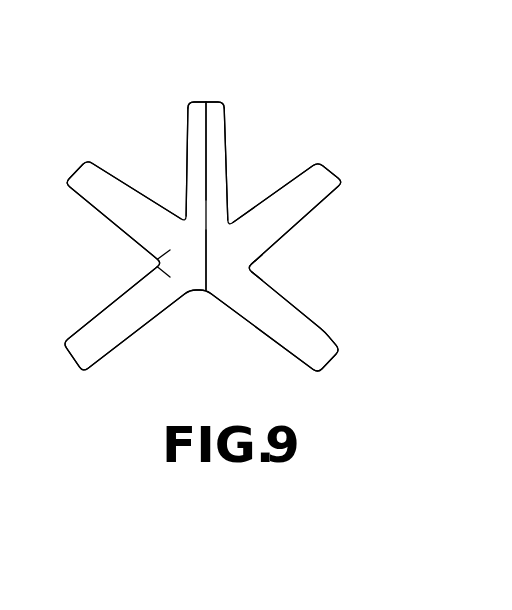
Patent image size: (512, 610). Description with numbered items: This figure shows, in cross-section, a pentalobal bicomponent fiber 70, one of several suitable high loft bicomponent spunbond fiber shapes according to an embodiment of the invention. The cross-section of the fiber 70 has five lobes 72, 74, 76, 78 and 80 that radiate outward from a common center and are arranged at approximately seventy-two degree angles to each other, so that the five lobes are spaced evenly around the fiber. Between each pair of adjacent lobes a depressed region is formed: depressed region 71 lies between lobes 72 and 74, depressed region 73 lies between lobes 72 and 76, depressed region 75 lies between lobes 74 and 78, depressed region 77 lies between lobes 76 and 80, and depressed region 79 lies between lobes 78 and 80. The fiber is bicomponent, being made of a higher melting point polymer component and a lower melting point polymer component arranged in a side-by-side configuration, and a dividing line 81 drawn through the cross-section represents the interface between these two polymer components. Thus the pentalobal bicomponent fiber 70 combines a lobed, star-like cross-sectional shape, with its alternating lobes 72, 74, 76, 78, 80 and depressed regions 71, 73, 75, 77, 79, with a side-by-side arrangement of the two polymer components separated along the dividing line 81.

The pentalobal bicomponent fiber 70 is at (388, 243).
The depressed region 71 is at (187, 178).
The lobe 72 is at (213, 105).
The depressed region 73 is at (225, 198).
The lobe 74 is at (88, 170).
The depressed region 75 is at (160, 263).
The lobe 76 is at (328, 175).
The depressed region 77 is at (248, 268).
The lobe 78 is at (85, 350).
The depressed region 79 is at (205, 295).
The lobe 80 is at (318, 340).
The dividing line 81 is at (206, 277).